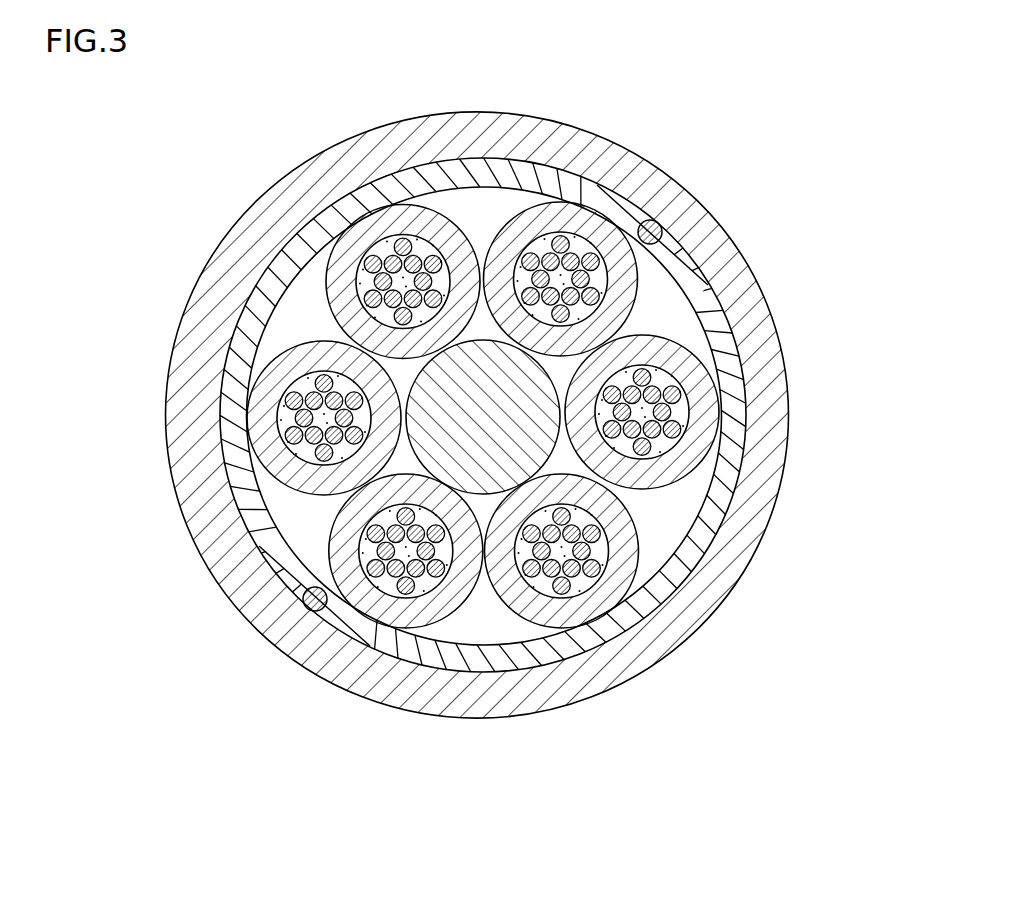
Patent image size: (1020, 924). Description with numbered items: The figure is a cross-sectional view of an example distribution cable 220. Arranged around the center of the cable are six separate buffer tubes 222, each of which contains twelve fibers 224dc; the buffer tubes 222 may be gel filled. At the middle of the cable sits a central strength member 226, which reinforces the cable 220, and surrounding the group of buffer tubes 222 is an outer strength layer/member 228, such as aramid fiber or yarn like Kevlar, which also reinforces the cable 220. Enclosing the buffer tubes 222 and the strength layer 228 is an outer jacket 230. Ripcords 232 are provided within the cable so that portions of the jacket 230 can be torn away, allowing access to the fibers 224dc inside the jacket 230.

The distribution cable 220 is at (636, 99).
The buffer tubes 222 is at (492, 441).
The fibers 224dc is at (659, 594).
The central strength member 226 is at (530, 385).
The outer strength layer/member 228 is at (452, 657).
The outer jacket 230 is at (763, 440).
The ripcords 232 is at (657, 222).